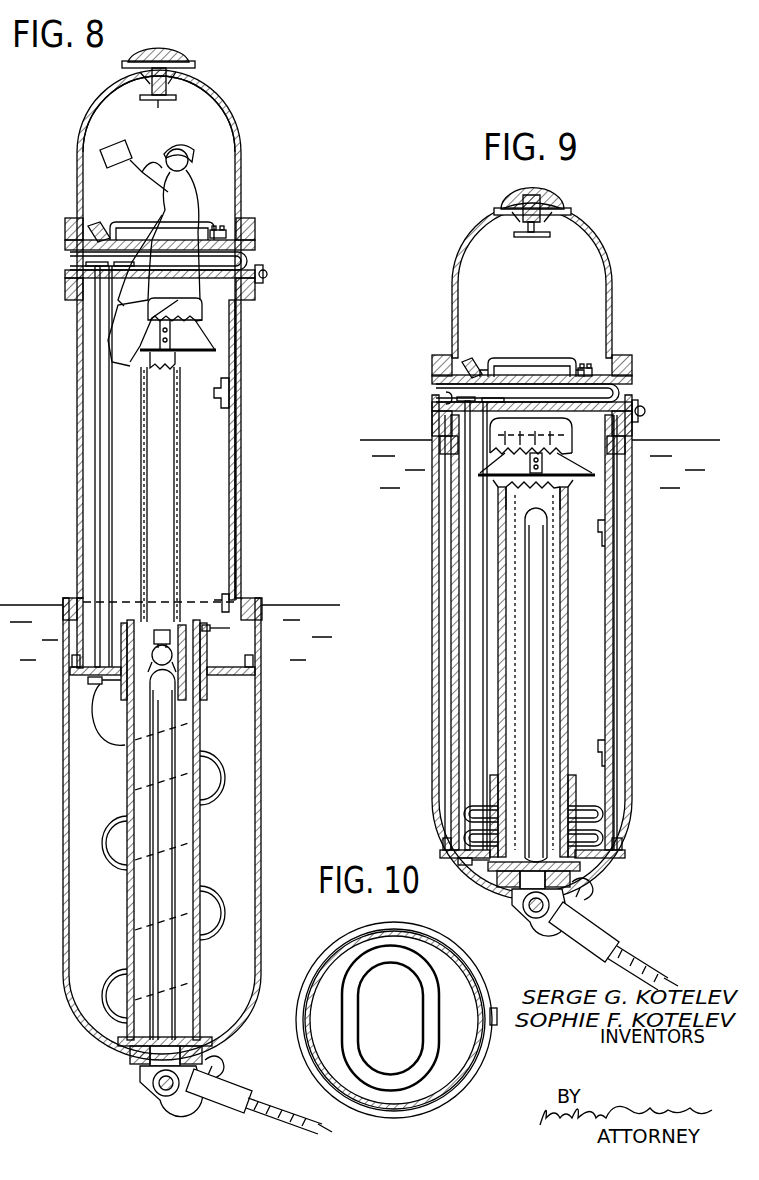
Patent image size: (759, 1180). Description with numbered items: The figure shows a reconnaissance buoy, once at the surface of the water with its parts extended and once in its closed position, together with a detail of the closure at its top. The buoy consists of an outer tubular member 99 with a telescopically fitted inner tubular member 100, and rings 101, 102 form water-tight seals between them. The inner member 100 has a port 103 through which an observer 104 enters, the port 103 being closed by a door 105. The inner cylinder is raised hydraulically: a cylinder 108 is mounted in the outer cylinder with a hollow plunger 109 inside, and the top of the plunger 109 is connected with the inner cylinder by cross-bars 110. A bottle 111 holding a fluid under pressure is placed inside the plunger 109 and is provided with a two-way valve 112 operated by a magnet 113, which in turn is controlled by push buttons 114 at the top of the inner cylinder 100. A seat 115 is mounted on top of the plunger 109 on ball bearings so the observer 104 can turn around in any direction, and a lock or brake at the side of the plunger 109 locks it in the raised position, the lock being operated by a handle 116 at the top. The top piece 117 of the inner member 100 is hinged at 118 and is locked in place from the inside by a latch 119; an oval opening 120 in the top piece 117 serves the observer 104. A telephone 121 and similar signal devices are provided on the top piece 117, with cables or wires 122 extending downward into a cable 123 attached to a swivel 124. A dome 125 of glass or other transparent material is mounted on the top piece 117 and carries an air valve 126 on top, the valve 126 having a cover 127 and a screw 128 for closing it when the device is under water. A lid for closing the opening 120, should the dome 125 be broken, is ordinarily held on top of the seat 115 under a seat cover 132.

In FIG. 8, the outer tubular member 99 is at (263, 712).
In FIG. 9, the outer tubular member 99 is at (437, 704).
In FIG. 8, the inner tubular member 100 is at (240, 366).
In FIG. 8, the ring 101 is at (70, 667).
In FIG. 9, the ring 101 is at (622, 777).
In FIG. 8, the ring 102 is at (72, 606).
In FIG. 9, the ring 102 is at (630, 454).
In FIG. 8, the port 103 is at (242, 486).
In FIG. 9, the port 103 is at (618, 613).
In FIG. 8, the observer 104 is at (185, 206).
In FIG. 8, the door 105 is at (198, 299).
In FIG. 9, the door 105 is at (614, 608).
In FIG. 8, the cylinder 108 is at (199, 846).
In FIG. 9, the cylinder 108 is at (568, 690).
In FIG. 8, the hollow plunger 109 is at (180, 518).
In FIG. 9, the hollow plunger 109 is at (553, 547).
In FIG. 9, the cross-bars 110 is at (545, 473).
In FIG. 8, the bottle 111 is at (160, 752).
In FIG. 9, the bottle 111 is at (540, 598).
In FIG. 8, the two-way valve 112 is at (172, 648).
In FIG. 8, the magnet 113 is at (162, 630).
In FIG. 8, the push buttons 114 is at (228, 232).
In FIG. 9, the push buttons 114 is at (586, 366).
In FIG. 8, the seat 115 is at (92, 684).
In FIG. 9, the seat 115 is at (462, 802).
In FIG. 8, the handle 116 is at (68, 256).
In FIG. 9, the handle 116 is at (448, 379).
In FIG. 8, the top piece 117 is at (252, 250).
In FIG. 9, the top piece 117 is at (438, 391).
In FIG. 10, the top piece 117 is at (446, 945).
In FIG. 8, the hinge 118 is at (268, 274).
In FIG. 9, the hinge 118 is at (646, 413).
In FIG. 10, the hinge 118 is at (495, 1007).
In FIG. 8, the latch 119 is at (88, 282).
In FIG. 9, the latch 119 is at (495, 399).
In FIG. 8, the oval opening 120 is at (193, 230).
In FIG. 9, the oval opening 120 is at (538, 360).
In FIG. 10, the oval opening 120 is at (412, 1030).
In FIG. 8, the telephone 121 is at (96, 229).
In FIG. 9, the telephone 121 is at (470, 362).
In FIG. 8, the coil 122 is at (210, 899).
In FIG. 9, the coil 122 is at (628, 817).
In FIG. 8, the cable 123 is at (258, 1119).
In FIG. 9, the cable 123 is at (630, 953).
In FIG. 8, the swivel 124 is at (161, 1098).
In FIG. 9, the swivel 124 is at (533, 920).
In FIG. 8, the dome 125 is at (235, 130).
In FIG. 9, the dome 125 is at (608, 264).
In FIG. 9, the air valve 126 is at (556, 197).
In FIG. 8, the cover 127 is at (158, 48).
In FIG. 9, the cover 127 is at (513, 203).
In FIG. 8, the screw 128 is at (168, 100).
In FIG. 9, the screw 128 is at (538, 238).
In FIG. 8, the seat cover 132 is at (180, 352).
In FIG. 9, the seat cover 132 is at (507, 462).